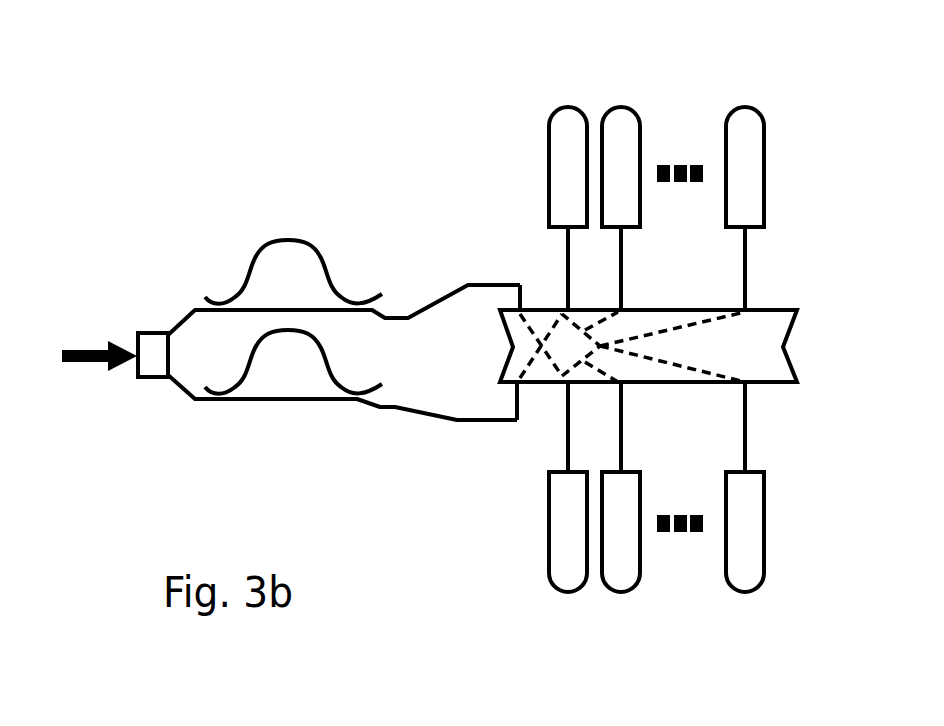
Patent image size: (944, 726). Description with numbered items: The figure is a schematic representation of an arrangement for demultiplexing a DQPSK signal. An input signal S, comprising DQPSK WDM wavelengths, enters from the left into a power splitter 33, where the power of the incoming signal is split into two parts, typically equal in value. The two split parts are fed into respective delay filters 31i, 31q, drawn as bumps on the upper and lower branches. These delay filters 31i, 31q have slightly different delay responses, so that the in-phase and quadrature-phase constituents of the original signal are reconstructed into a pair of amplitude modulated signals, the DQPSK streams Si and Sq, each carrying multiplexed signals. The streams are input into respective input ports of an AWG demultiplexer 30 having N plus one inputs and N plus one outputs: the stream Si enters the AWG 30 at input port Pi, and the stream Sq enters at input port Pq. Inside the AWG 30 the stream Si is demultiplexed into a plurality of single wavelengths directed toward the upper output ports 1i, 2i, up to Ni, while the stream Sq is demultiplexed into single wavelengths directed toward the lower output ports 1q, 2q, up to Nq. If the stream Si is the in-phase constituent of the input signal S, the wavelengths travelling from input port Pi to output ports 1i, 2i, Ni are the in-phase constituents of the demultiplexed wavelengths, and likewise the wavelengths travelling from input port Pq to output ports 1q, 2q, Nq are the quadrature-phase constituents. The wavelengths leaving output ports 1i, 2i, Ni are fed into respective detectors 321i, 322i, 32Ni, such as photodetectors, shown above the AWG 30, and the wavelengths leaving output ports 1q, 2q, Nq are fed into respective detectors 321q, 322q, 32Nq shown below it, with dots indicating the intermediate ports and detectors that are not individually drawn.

The input signal S is at (99, 337).
The power splitter 33 is at (153, 330).
The delay filter 31i is at (247, 240).
The delay filter 31q is at (257, 410).
The DQPSK stream Si is at (344, 299).
The DQPSK stream Sq is at (342, 397).
The input port Pi is at (512, 308).
The input port Pq is at (510, 386).
The AWG demultiplexer 30 is at (788, 360).
The output port 1i is at (558, 300).
The output port 2i is at (628, 300).
The output port Ni is at (752, 307).
The output port 1q is at (568, 387).
The output port 2q is at (630, 387).
The output port Nq is at (753, 395).
The detector 321i is at (550, 107).
The detector 322i is at (613, 98).
The detector 32Ni is at (737, 97).
The detector 321q is at (550, 590).
The detector 322q is at (612, 600).
The detector 32Nq is at (737, 600).